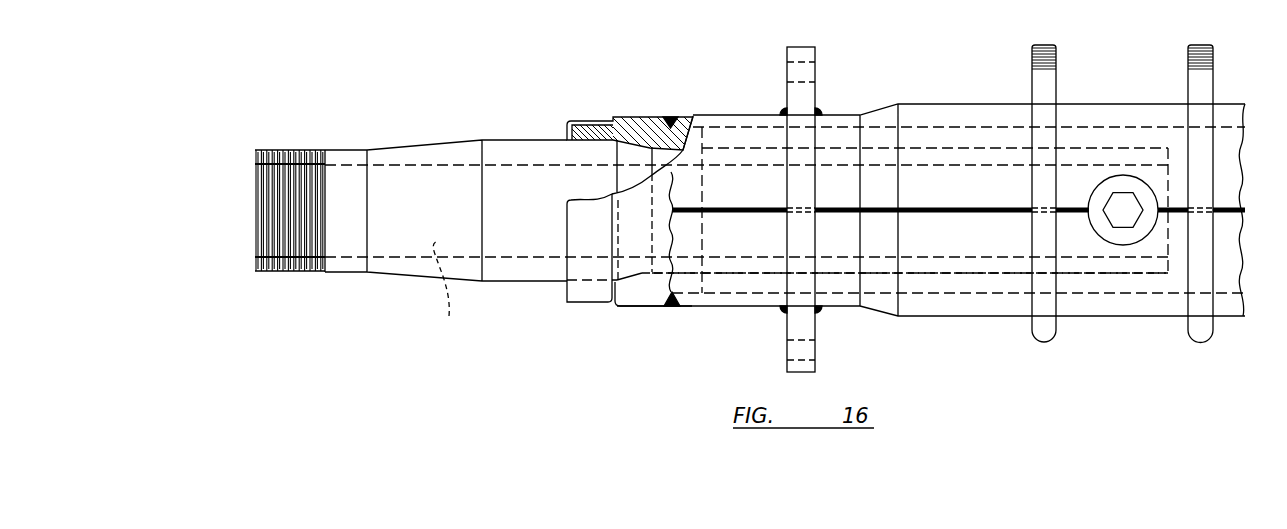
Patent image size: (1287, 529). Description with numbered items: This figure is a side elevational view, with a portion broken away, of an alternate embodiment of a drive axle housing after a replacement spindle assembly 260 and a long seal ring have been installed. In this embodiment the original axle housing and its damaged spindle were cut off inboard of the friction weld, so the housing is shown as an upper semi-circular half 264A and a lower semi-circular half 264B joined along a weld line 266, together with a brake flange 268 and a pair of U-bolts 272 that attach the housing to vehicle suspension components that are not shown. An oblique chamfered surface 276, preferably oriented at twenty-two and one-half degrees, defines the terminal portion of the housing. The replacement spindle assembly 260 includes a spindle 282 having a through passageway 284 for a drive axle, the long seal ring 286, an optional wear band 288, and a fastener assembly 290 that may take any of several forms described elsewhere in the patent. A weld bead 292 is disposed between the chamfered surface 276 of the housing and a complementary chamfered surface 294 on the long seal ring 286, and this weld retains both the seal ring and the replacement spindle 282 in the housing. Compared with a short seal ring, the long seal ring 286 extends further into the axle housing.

The replacement spindle assembly 260 is at (410, 316).
The spindle 282 is at (417, 140).
The through passageway 284 is at (450, 291).
The wear band 288 is at (567, 131).
The long seal ring 286 is at (598, 130).
The complementary chamfered surface 294 is at (637, 117).
The oblique chamfered surface 276 is at (695, 115).
The weld bead 292 is at (672, 306).
The upper semi-circular half 264A is at (957, 115).
The lower semi-circular half 264B is at (943, 308).
The weld line 266 is at (970, 214).
The brake flange 268 is at (797, 325).
The fastener assembly 290 is at (1125, 96).
The U-bolts 272 is at (1050, 329).